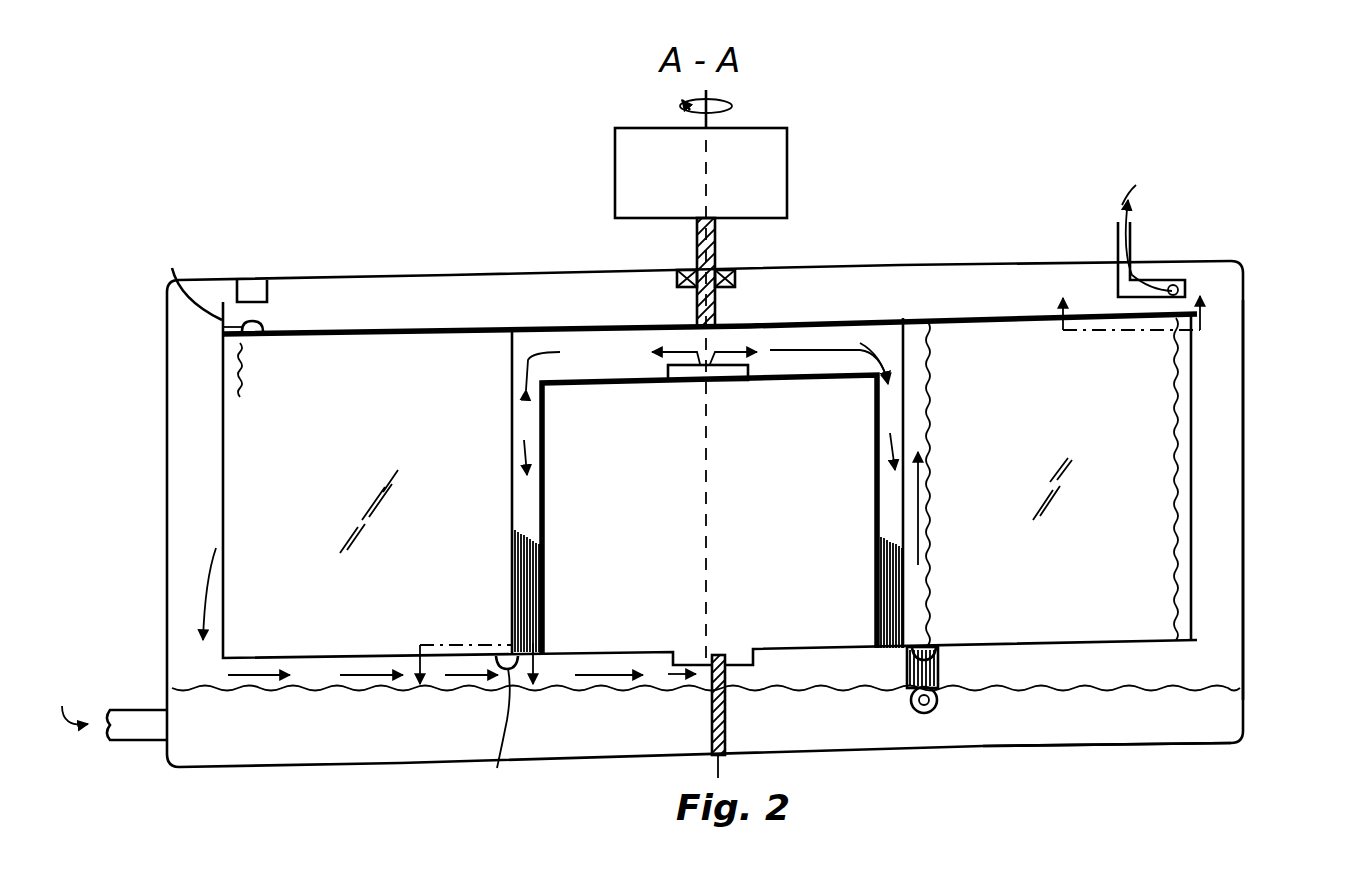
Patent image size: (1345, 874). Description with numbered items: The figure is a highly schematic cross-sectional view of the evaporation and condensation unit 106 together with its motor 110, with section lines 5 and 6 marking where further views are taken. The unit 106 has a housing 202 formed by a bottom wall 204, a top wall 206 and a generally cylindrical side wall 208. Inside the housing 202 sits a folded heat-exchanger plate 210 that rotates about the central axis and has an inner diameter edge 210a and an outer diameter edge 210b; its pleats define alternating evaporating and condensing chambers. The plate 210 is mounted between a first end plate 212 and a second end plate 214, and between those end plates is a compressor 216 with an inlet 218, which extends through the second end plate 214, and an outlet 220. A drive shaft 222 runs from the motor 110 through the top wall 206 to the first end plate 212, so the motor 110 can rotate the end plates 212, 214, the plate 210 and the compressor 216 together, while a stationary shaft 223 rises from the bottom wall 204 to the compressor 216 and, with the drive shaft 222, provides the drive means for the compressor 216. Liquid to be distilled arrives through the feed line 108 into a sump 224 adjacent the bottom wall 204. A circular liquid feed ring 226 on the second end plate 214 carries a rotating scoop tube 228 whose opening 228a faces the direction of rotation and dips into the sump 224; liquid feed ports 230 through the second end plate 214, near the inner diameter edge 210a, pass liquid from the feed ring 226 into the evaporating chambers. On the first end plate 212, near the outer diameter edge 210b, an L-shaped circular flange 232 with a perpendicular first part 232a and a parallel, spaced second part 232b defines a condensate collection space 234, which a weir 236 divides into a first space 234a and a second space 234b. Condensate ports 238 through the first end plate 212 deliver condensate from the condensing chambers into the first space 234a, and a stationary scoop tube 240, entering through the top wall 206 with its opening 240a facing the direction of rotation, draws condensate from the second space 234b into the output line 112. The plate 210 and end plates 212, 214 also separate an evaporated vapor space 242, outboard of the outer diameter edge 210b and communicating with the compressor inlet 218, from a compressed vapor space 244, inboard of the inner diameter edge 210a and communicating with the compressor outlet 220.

The evaporation and condensation unit 106 is at (445, 245).
The feed line 108 is at (135, 712).
The motor 110 is at (788, 172).
The output line 112 is at (1132, 228).
The housing 202 is at (158, 362).
The bottom wall 204 is at (1130, 746).
The top wall 206 is at (446, 268).
The side wall 208 is at (1244, 445).
The heat-exchanger plate 210 is at (1200, 536).
The inner diameter edge 210a is at (512, 428).
The outer diameter edge 210b is at (223, 458).
The first end plate 212 is at (560, 326).
The second end plate 214 is at (316, 665).
The compressor 216 is at (709, 509).
The compressor inlet 218 is at (785, 652).
The compressor outlet 220 is at (752, 372).
The drive shaft 222 is at (716, 246).
The stationary shaft 223 is at (707, 722).
The sump 224 is at (706, 710).
The liquid feed ring 226 is at (510, 740).
The rotating scoop tube 228 is at (947, 700).
The opening 228a is at (907, 706).
The liquid feed ports 230 is at (500, 652).
The circular flange 232 is at (262, 296).
The first part 232a is at (172, 268).
The second part 232b is at (236, 272).
The condensate collection space 234 is at (292, 312).
The first condensate collection space 234a is at (262, 327).
The second condensate collection space 234b is at (247, 311).
The weir 236 is at (268, 337).
The condensate ports 238 is at (1172, 332).
The stationary scoop tube 240 is at (1153, 268).
The opening 240a is at (1192, 317).
The evaporated vapor space 242 is at (1226, 612).
The compressed vapor space 244 is at (560, 485).
The section line 5- 5 is at (476, 686).
The section line 6- 6 is at (1131, 296).